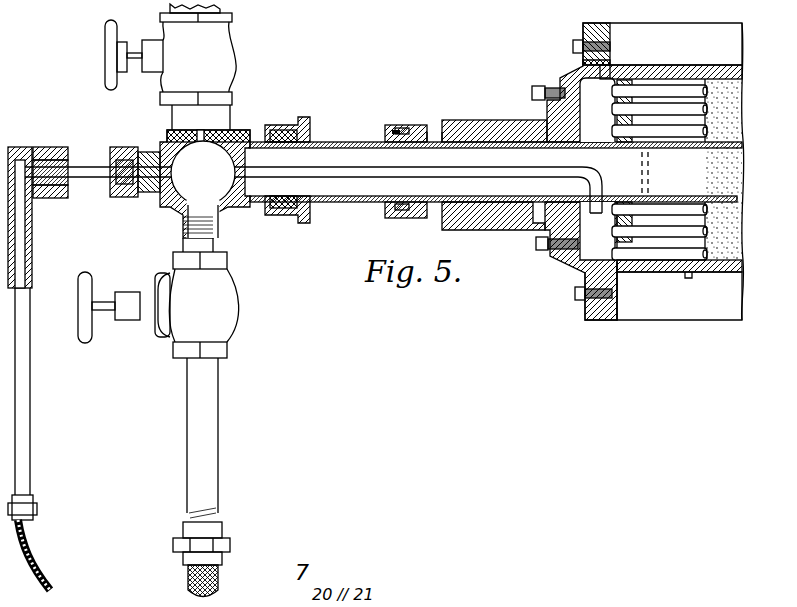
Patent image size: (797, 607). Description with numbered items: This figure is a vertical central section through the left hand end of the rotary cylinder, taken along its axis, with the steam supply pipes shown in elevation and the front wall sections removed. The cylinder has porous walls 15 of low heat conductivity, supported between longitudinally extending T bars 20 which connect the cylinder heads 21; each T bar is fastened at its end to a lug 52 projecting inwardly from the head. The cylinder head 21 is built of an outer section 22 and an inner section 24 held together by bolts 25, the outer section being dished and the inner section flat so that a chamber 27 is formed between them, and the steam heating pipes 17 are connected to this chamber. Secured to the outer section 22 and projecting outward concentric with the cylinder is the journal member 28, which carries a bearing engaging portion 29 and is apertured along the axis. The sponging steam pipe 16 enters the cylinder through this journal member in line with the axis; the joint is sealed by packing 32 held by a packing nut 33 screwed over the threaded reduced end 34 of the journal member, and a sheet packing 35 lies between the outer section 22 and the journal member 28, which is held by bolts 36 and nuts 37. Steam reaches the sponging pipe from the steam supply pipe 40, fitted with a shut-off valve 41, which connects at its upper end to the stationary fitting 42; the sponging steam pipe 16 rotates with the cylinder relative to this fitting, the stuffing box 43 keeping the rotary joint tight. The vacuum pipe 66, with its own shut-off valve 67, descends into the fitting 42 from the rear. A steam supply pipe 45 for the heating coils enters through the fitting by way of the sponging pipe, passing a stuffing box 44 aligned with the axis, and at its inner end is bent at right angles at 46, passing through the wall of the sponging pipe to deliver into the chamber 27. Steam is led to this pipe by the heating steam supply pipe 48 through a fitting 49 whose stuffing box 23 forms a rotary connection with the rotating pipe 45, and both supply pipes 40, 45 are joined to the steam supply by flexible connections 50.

The porous walls 15 is at (113, 591).
The sponging steam pipe 16 is at (360, 203).
The steam heating pipes 17 is at (722, 88).
The T bars 20 is at (672, 40).
The cylinder heads 21 is at (595, 322).
The outer section 22 is at (582, 322).
The stuffing box 23 is at (48, 148).
The inner section 24 is at (620, 323).
The bolts 25 is at (572, 308).
The chamber 27 is at (580, 290).
The journal member 28 is at (440, 205).
The bearing engaging portion 29 is at (505, 208).
The packing 32 is at (420, 128).
The packing nut 33 is at (400, 128).
The reduced end 34 is at (450, 122).
The sheet packing 35 is at (562, 86).
The bolts 36 is at (540, 250).
The nuts 37 is at (555, 251).
The steam supply pipe 40 is at (207, 405).
The shut-off valve 41 is at (222, 315).
The stationary fitting 42 is at (225, 236).
The stuffing box 43 is at (282, 120).
The stuffing box 44 is at (128, 198).
The steam supply pipe 45 is at (86, 165).
The right angle bend 46 is at (613, 183).
The heating steam supply pipe 48 is at (27, 368).
The fitting 49 is at (30, 252).
The flexible connections 50 is at (37, 558).
The lugs 52 is at (658, 72).
The vacuum pipe 66 is at (215, 95).
The shut-off valve 67 is at (105, 50).